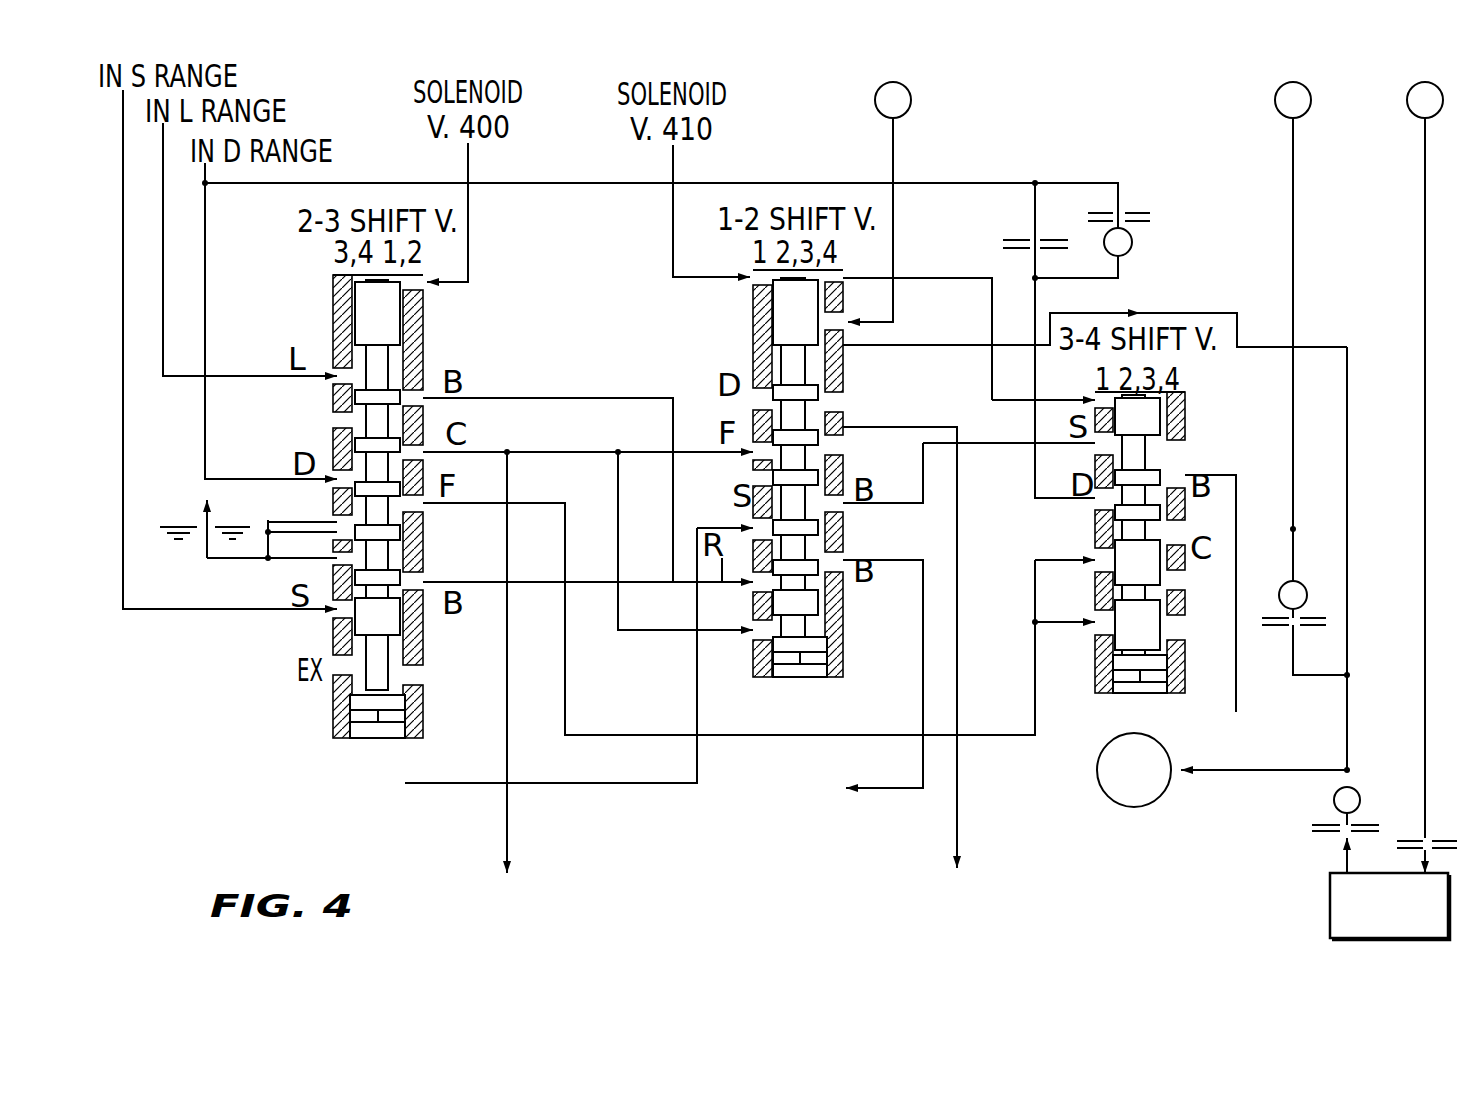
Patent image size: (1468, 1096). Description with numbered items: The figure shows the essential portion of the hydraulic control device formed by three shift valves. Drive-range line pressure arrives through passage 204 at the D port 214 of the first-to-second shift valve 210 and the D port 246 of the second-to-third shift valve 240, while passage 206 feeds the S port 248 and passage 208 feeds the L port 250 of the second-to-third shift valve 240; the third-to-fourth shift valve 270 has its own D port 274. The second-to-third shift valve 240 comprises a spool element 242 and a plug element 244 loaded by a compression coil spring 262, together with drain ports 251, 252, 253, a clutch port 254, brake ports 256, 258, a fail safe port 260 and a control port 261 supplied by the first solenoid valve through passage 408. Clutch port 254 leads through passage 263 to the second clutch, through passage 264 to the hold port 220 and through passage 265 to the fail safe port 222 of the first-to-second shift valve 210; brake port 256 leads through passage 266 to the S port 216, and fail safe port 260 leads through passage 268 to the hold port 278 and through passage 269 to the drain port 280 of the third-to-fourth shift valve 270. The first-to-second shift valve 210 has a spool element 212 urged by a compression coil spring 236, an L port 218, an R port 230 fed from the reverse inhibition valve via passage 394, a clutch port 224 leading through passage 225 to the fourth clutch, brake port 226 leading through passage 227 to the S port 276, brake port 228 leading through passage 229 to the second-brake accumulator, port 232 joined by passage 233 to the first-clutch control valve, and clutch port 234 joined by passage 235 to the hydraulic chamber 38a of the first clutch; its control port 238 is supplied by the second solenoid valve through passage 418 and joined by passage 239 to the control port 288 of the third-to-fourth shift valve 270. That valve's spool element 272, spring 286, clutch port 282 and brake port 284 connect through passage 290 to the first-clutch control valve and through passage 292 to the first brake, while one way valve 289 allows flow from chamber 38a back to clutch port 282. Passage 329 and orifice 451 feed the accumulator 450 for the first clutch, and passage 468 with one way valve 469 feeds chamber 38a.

The passage 204 is at (207, 190).
The passage 206 is at (123, 258).
The passage 208 is at (165, 272).
The passage 408 is at (470, 166).
The passage 418 is at (673, 172).
The passage 233 is at (898, 152).
The passage 239 is at (962, 278).
The control port 288 is at (1095, 392).
The D port 274 is at (1093, 505).
The passage 235 is at (1188, 305).
The passage 290 is at (1304, 388).
The one way valve 289 is at (1286, 588).
The passage 292 is at (1238, 665).
The passage 329 is at (1424, 545).
The orifice 451 is at (1390, 826).
The one way valve 469 is at (1333, 800).
The passage 468 is at (1340, 863).
The accumulator 450 is at (1330, 912).
The hydraulic pressure chamber 38a is at (1128, 800).
The passage 225 is at (960, 805).
The passage 229 is at (876, 790).
The passage 227 is at (925, 470).
The S port 276 is at (1052, 446).
The clutch port 224 is at (848, 445).
The brake port 226 is at (840, 521).
The spool element 212 is at (835, 400).
The clutch port 234 is at (846, 350).
The port 232 is at (845, 305).
The control port 238 is at (733, 301).
The D port 214 is at (757, 393).
The fail safe port 222 is at (753, 450).
The S port 216 is at (747, 520).
The R port 230 is at (745, 527).
The L port 218 is at (758, 594).
The hold port 220 is at (761, 660).
The brake port 228 is at (835, 600).
The compression coil spring 236 is at (838, 638).
The 1-2 shift valve 210 is at (846, 670).
The passage 264 is at (680, 630).
The passage 266 is at (628, 585).
The passage 265 is at (690, 447).
The brake port 258 is at (425, 400).
The clutch port 254 is at (425, 462).
The passage 263 is at (507, 748).
The passage 394 is at (593, 784).
The passage 268 is at (738, 736).
The passage 269 is at (1041, 562).
The hold port 278 is at (1100, 636).
The drain port 280 is at (1097, 577).
The spool element 272 is at (1165, 420).
The brake port 284 is at (1173, 458).
The clutch port 282 is at (1176, 588).
The compression coil spring 286 is at (1166, 633).
The 3-4 shift valve 270 is at (1170, 672).
The drain port 253 is at (248, 526).
The drain port 251 is at (337, 572).
The S port 248 is at (337, 615).
The D port 246 is at (337, 490).
The drain port 252 is at (332, 421).
The L port 250 is at (337, 360).
The control port 261 is at (428, 300).
The plug element 244 is at (425, 350).
The fail safe port 260 is at (425, 522).
The spool element 242 is at (425, 560).
The brake port 256 is at (425, 600).
The compression coil spring 262 is at (425, 678).
The 2-3 shift valve 240 is at (335, 712).